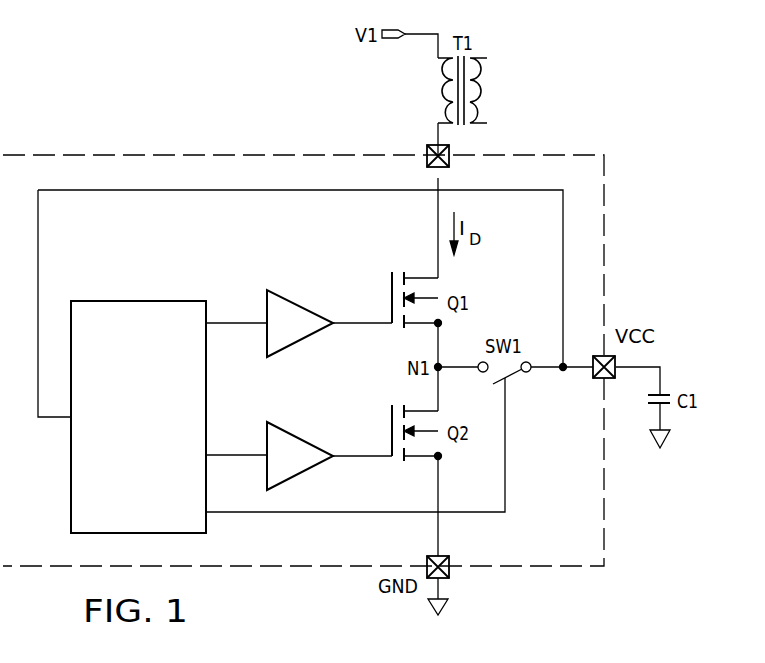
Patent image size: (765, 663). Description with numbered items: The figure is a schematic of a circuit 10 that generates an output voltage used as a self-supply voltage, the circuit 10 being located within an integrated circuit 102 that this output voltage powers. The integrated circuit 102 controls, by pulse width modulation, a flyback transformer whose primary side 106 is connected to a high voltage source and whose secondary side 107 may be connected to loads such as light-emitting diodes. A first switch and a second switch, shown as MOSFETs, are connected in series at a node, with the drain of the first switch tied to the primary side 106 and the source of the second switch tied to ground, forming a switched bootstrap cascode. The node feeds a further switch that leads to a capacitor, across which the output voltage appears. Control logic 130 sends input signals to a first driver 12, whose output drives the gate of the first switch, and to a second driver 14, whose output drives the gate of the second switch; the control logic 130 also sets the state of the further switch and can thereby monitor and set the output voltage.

The circuit 10 is at (193, 93).
The first driver 12 is at (302, 303).
The second driver 14 is at (302, 433).
The integrated circuit 102 is at (607, 242).
The primary side 106 is at (448, 100).
The secondary side 107 is at (482, 80).
The control logic 130 is at (160, 465).